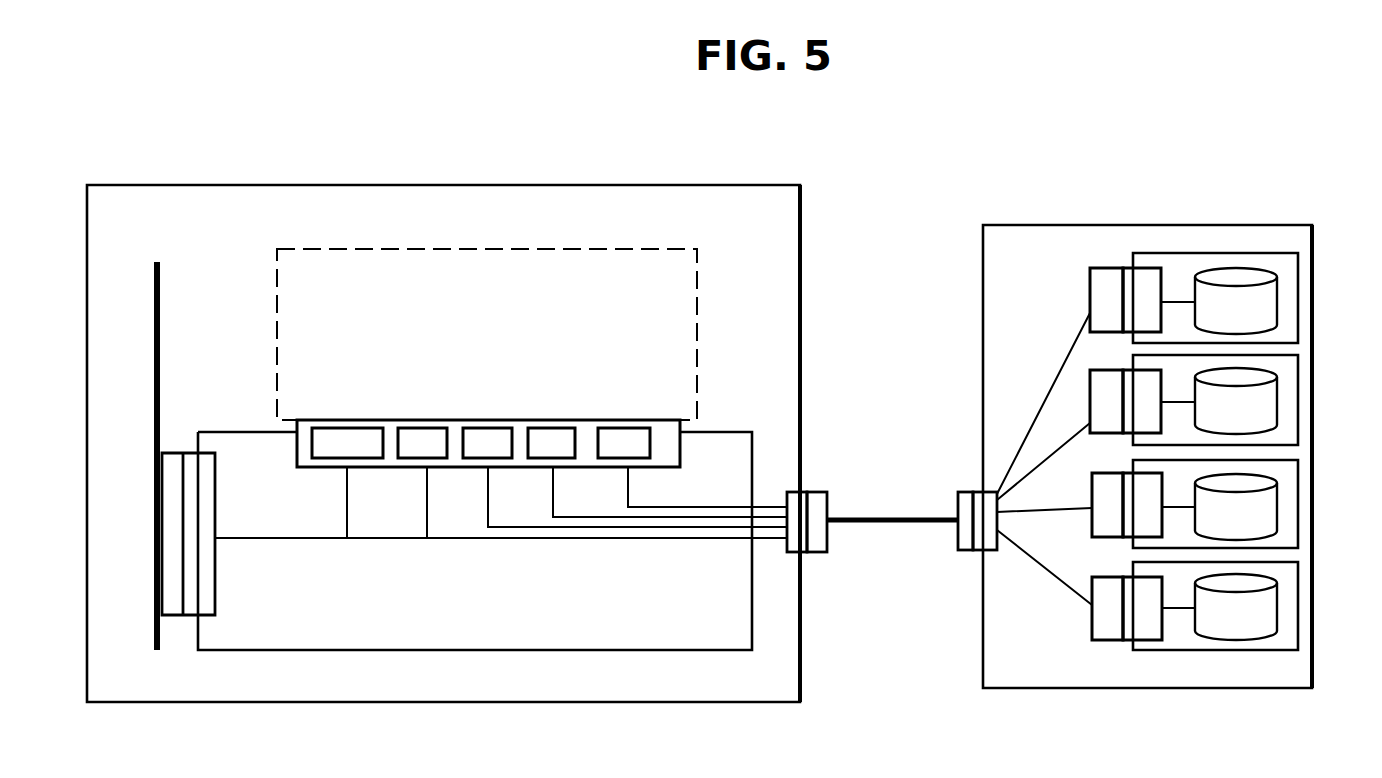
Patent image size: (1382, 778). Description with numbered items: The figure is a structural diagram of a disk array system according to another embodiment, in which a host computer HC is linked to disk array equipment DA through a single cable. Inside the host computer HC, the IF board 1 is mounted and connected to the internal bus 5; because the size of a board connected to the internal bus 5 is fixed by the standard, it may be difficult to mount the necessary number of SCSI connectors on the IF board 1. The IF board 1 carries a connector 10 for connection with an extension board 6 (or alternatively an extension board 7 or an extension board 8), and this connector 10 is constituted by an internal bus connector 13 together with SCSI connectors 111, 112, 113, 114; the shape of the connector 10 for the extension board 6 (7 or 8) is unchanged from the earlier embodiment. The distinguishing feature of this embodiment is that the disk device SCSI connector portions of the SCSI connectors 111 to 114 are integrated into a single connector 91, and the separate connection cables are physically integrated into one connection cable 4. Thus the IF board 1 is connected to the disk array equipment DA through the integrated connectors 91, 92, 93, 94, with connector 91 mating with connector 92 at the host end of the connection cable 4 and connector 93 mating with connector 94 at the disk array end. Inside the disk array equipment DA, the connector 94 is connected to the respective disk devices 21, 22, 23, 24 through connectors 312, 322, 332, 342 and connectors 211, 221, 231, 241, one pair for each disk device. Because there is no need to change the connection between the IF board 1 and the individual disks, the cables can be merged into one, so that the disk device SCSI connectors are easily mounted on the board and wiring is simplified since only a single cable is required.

The IF board 1 is at (675, 650).
The connection cable 4 is at (887, 525).
The internal bus 5 is at (153, 516).
The extension board 6 is at (502, 308).
The extension board 7 is at (487, 334).
The extension board 8 is at (487, 334).
The connector 10 is at (387, 470).
The internal bus connector 13 is at (346, 437).
The SCSI connector 111 is at (622, 437).
The SCSI connector 112 is at (550, 437).
The SCSI connector 113 is at (487, 437).
The SCSI connector 114 is at (423, 437).
The integrated connector 91 is at (797, 490).
The integrated connector 92 is at (815, 552).
The integrated connector 93 is at (962, 550).
The integrated connector 94 is at (987, 550).
The disk device 21 is at (1298, 305).
The disk device 22 is at (1298, 420).
The disk device 23 is at (1298, 520).
The disk device 24 is at (1298, 620).
The connector 211 is at (1143, 272).
The connector 221 is at (1133, 375).
The connector 231 is at (1135, 522).
The connector 241 is at (1142, 640).
The connector 312 is at (1100, 272).
The connector 322 is at (1093, 390).
The connector 332 is at (1105, 484).
The connector 342 is at (1105, 642).
The host computer HC is at (697, 703).
The disk array equipment DA is at (1023, 690).